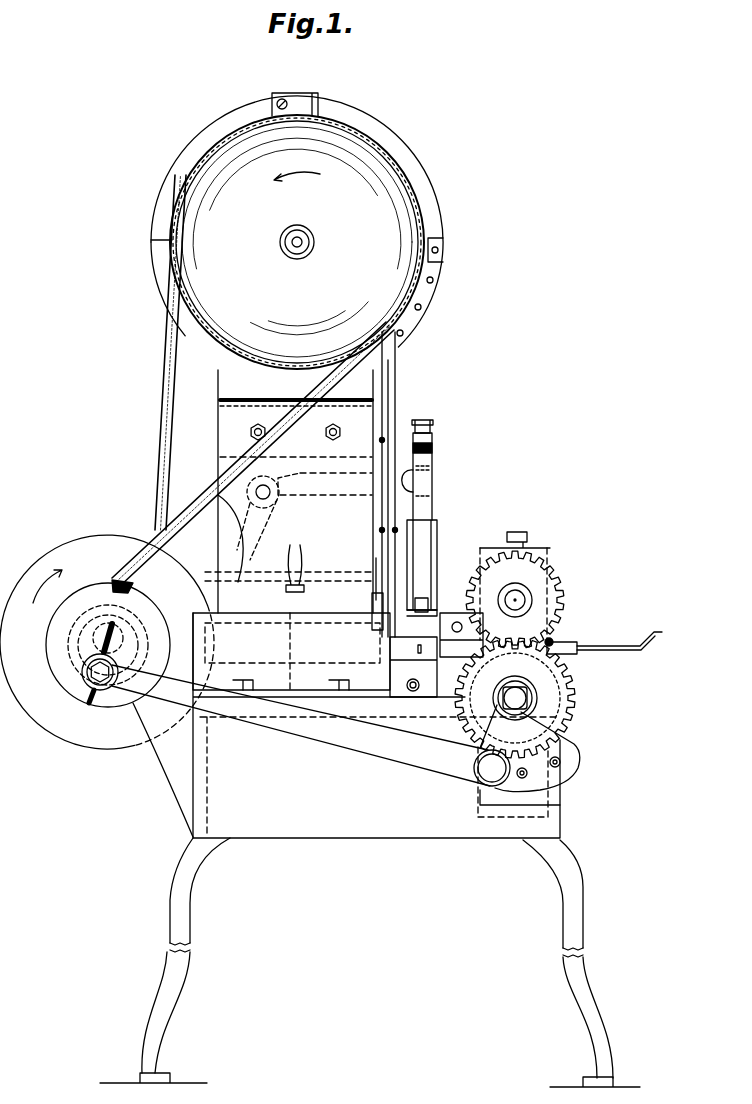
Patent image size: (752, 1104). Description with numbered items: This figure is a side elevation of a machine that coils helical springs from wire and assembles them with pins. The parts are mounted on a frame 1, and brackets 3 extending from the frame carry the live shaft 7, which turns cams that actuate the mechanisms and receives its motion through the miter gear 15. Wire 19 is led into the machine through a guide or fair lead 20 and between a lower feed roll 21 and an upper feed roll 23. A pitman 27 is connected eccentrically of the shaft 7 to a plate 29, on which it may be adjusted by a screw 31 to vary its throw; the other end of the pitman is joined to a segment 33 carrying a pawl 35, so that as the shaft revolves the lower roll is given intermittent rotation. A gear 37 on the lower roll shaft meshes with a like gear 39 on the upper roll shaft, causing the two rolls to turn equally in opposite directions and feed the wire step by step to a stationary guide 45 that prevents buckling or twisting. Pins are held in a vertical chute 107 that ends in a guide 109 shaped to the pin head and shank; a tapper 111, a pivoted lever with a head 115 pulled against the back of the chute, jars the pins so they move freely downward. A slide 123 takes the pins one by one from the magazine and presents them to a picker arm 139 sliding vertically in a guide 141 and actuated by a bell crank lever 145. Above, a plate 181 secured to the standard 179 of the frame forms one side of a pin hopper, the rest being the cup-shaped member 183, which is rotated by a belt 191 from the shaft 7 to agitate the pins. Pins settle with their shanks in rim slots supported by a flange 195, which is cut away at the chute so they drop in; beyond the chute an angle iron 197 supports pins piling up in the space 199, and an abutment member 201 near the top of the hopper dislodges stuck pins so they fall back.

The frame 1 is at (425, 826).
The brackets 3 is at (173, 773).
The live shaft 7 is at (72, 637).
The miter gear 15 is at (297, 72).
The wire 19 is at (623, 637).
The guide or fair lead 20 is at (577, 644).
The lower feed roll 21 is at (578, 706).
The upper feed roll 23 is at (566, 597).
The pitman 27 is at (342, 733).
The plate 29 is at (66, 678).
The screw 31 is at (125, 565).
The segment 33 is at (558, 728).
The pawl 35 is at (562, 756).
The gear 37 is at (565, 672).
The gear 39 is at (552, 628).
The stationary guide 45 is at (455, 610).
The vertical guideway or chute 107 is at (396, 377).
The guide 109 is at (373, 608).
The tapper 111 is at (205, 572).
The head 115 is at (375, 575).
The slide 123 is at (76, 738).
The picker arm 139 is at (430, 508).
The guide 141 is at (431, 548).
The bell crank lever 145 is at (236, 536).
The standard 179 is at (218, 444).
The plate 181 is at (218, 380).
The cup-shaped member 183 is at (406, 199).
The belt 191 is at (158, 433).
The flange 195 is at (163, 271).
The angle iron 197 is at (431, 296).
The space 199 is at (428, 269).
The abutment member 201 is at (318, 98).